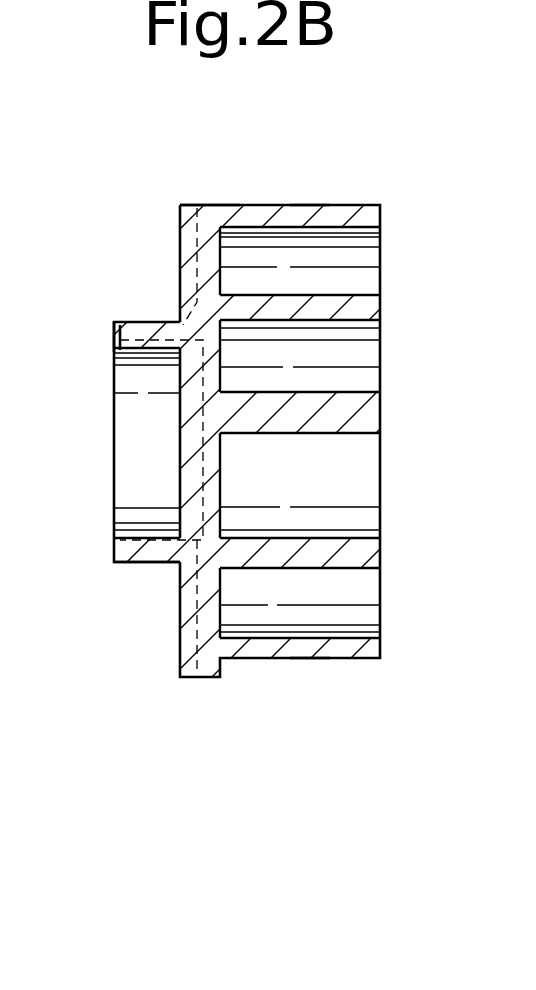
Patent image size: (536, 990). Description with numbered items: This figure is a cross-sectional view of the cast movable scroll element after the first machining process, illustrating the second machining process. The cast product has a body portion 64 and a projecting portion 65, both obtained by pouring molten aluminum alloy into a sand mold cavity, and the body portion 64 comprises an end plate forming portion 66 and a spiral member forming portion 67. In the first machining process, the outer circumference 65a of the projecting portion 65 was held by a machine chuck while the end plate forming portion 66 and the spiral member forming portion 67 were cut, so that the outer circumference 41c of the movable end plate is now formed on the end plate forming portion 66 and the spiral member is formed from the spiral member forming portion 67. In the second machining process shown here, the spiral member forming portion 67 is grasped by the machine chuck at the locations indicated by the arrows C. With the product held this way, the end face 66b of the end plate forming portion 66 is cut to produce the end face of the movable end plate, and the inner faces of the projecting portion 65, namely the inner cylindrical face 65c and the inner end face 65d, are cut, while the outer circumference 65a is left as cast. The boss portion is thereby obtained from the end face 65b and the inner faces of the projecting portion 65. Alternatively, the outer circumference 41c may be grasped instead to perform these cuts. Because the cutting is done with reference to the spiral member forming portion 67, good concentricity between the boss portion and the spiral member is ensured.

The body portion 64 is at (268, 486).
The end plate forming portion 66 is at (203, 677).
The spiral member forming portion 67 is at (343, 645).
The outer circumference of the movable end plate 41c is at (205, 207).
The end face of the end plate forming portion 66b is at (186, 226).
The projecting portion 65 is at (103, 450).
The outer circumference of the projecting portion 65a is at (153, 562).
The end face of the projecting portion 65b is at (118, 333).
The inner cylindrical face of the projecting portion 65c is at (148, 540).
The inner end face of the projecting portion 65d is at (180, 422).
The arrows indicating chuck grasping C is at (308, 205).